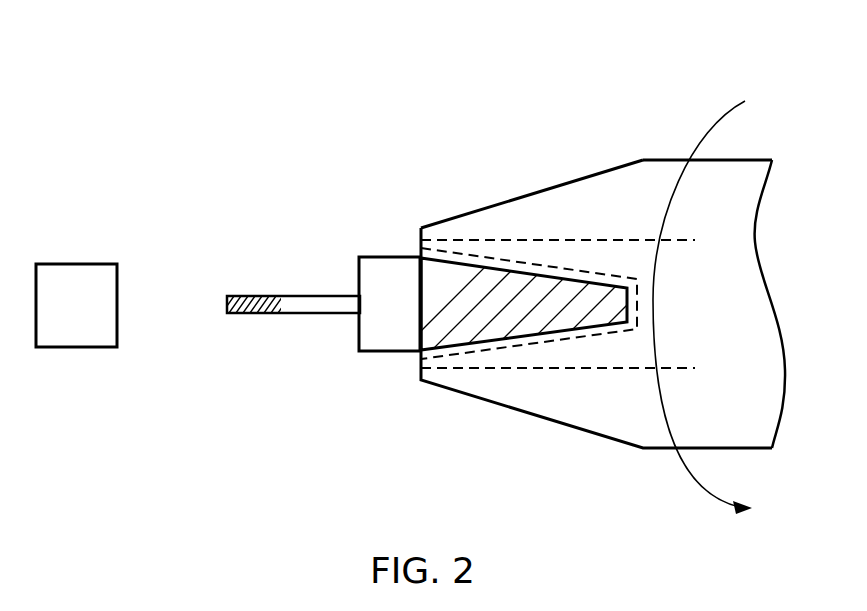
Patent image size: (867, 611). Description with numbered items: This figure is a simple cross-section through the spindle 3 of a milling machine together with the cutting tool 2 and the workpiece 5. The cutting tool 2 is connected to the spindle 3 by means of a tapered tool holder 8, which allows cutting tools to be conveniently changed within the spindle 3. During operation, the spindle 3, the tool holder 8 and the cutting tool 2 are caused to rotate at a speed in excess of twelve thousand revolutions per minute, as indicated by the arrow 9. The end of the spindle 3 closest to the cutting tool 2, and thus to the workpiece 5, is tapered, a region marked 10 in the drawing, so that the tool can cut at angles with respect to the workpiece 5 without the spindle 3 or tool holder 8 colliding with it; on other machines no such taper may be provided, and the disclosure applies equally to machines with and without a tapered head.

The workpiece 5 is at (77, 283).
The cutting tool 2 is at (253, 294).
The spindle 3 is at (627, 210).
The tapered nozzle wall 10 is at (417, 218).
The tapered tool holder 8 is at (482, 332).
The arrow 9 is at (733, 100).